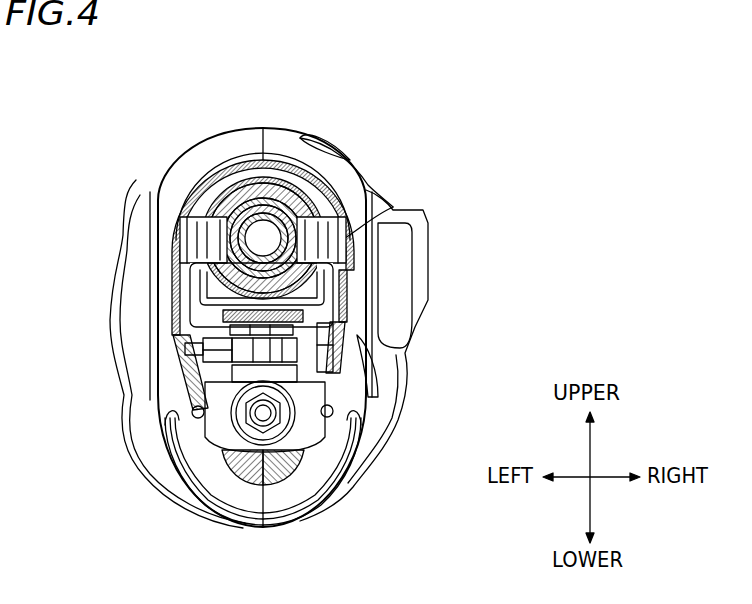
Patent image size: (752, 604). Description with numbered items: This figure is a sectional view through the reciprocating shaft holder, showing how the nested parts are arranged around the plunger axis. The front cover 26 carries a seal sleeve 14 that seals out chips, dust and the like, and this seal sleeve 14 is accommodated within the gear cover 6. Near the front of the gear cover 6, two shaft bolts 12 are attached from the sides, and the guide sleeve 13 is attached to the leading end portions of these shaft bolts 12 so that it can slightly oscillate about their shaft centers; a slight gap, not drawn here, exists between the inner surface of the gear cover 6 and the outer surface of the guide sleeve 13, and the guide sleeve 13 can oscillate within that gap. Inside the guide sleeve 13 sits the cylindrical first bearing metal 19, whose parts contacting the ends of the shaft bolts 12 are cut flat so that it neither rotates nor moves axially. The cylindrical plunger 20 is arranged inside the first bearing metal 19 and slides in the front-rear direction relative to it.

The gear cover 6 is at (222, 173).
The shaft bolts 12 is at (177, 237).
The guide sleeve 13 is at (297, 183).
The seal sleeve 14 is at (313, 193).
The first bearing metal 19 is at (285, 170).
The plunger 20 is at (248, 170).
The front cover 26 is at (180, 293).